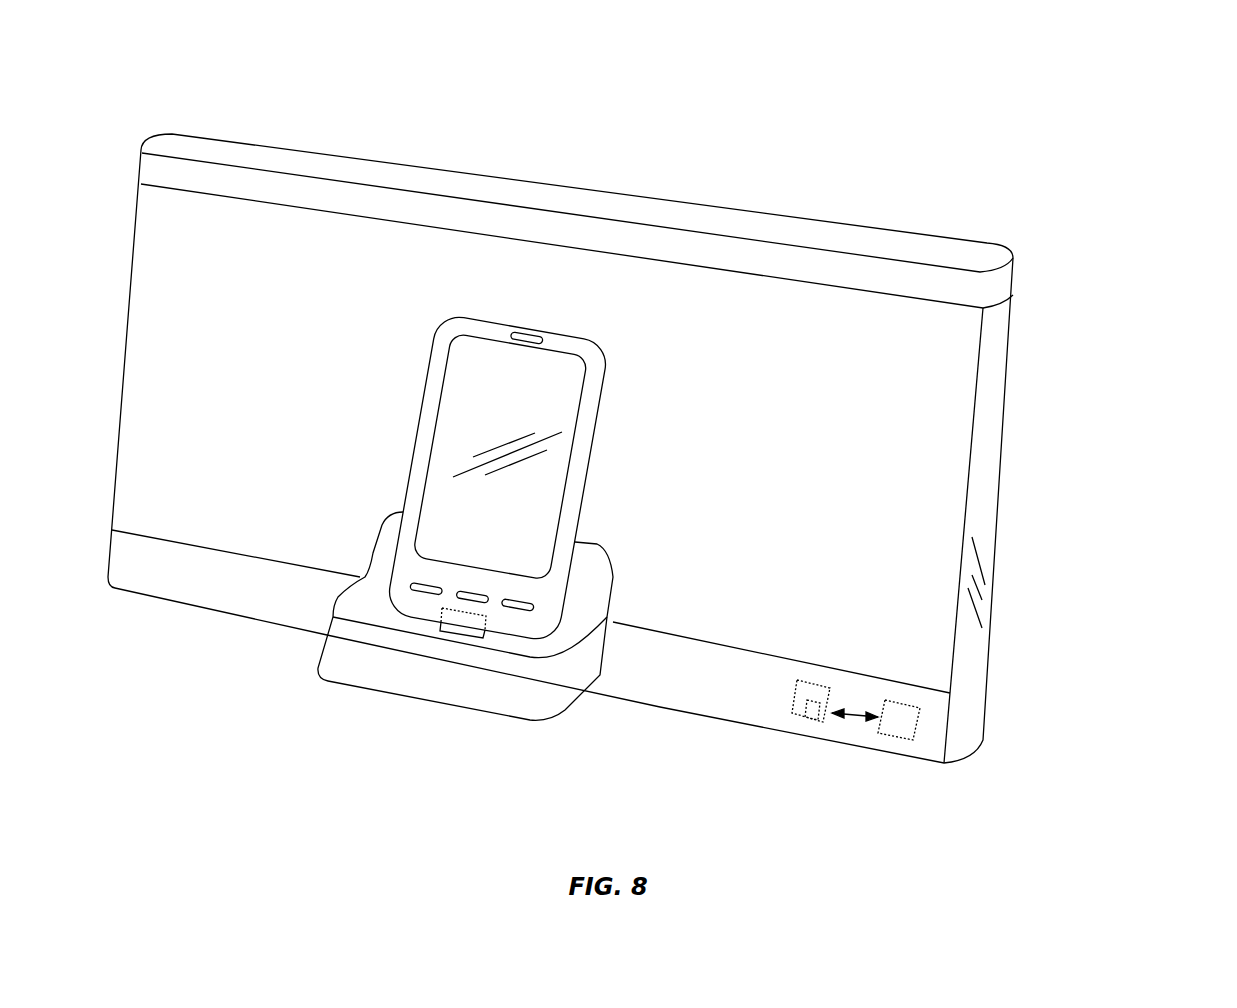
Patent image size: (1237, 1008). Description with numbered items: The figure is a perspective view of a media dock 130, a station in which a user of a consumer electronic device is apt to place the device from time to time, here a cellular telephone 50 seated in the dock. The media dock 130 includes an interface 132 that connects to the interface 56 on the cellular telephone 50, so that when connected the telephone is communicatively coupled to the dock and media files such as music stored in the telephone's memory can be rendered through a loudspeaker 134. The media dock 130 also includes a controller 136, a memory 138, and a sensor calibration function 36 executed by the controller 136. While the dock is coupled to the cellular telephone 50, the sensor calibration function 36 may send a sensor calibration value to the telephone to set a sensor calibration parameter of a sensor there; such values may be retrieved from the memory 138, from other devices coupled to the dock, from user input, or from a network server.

The media dock 130 is at (1152, 107).
The loudspeaker 134 is at (800, 468).
The cellular telephone 50 is at (572, 325).
The interface 56 is at (443, 608).
The interface 132 is at (463, 638).
The memory 138 is at (790, 706).
The sensor calibration function 36 is at (814, 713).
The controller 136 is at (912, 740).